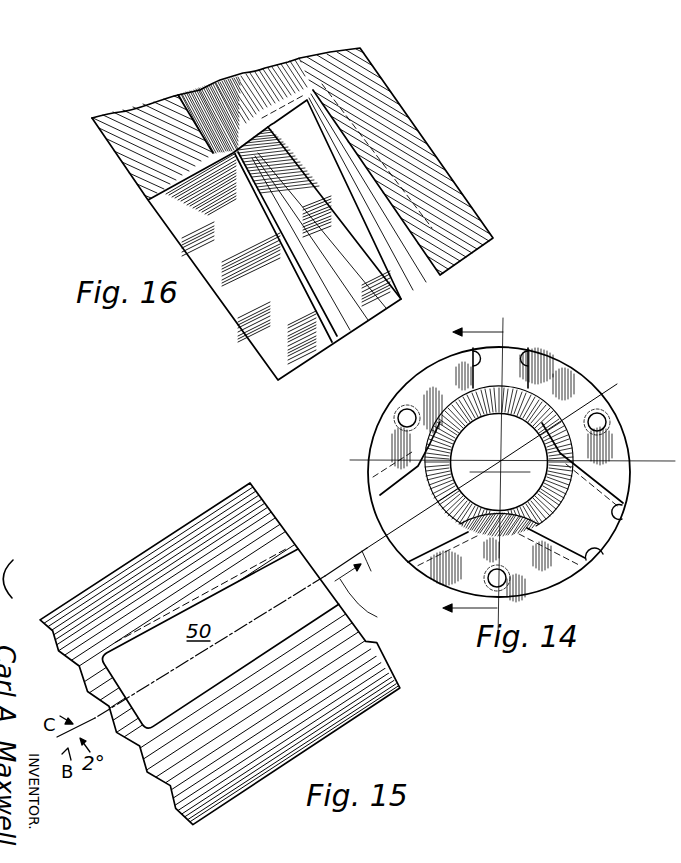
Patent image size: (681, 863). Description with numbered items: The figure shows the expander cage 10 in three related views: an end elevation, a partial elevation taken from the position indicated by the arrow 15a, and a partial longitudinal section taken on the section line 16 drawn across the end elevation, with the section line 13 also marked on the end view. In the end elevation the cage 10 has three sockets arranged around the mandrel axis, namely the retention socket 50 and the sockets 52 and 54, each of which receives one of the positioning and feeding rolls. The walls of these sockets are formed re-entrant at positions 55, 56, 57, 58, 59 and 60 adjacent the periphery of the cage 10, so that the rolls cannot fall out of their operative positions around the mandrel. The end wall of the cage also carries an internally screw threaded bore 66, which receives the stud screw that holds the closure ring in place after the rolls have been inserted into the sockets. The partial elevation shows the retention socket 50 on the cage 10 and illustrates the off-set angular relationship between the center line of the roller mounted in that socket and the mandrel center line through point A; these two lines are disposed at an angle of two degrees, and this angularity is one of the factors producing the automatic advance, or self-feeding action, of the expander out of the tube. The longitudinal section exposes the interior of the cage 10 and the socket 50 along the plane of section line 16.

In FIG. 16, the cage 10 is at (118, 143).
In FIG. 15, the cage 10 is at (219, 645).
In FIG. 15, the retention socket 50 is at (140, 552).
In FIG. 14, the retention socket 50 is at (432, 505).
In FIG. 14, the socket 52 is at (585, 522).
In FIG. 14, the socket 54 is at (508, 352).
In FIG. 14, the re-entrant wall position 55 is at (380, 493).
In FIG. 14, the re-entrant wall position 56 is at (408, 560).
In FIG. 14, the re-entrant wall position 57 is at (598, 556).
In FIG. 14, the re-entrant wall position 58 is at (622, 516).
In FIG. 14, the re-entrant wall position 59 is at (532, 362).
In FIG. 14, the re-entrant wall position 60 is at (473, 362).
In FIG. 14, the internally screw threaded bore 66 is at (400, 418).
In FIG. 14, the section line 13- 13 is at (460, 470).
In FIG. 15, the section line 16- 16 is at (361, 547).
In FIG. 14, the section line 16- 16 is at (614, 384).
In FIG. 15, the arrow 15a is at (371, 591).
In FIG. 14, the center line AB A is at (486, 468).